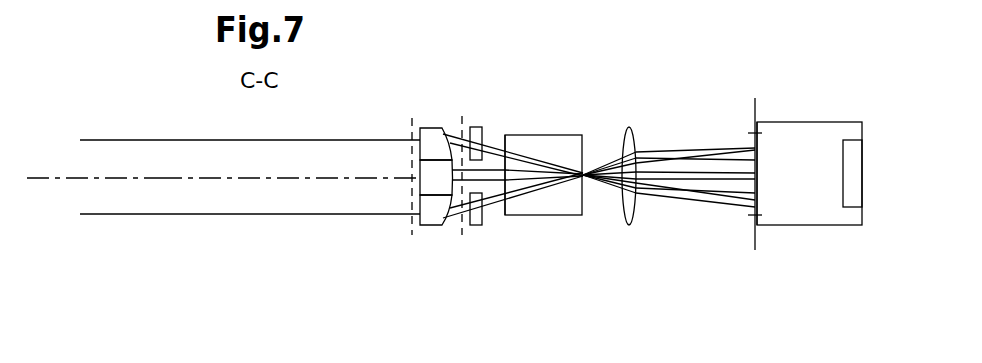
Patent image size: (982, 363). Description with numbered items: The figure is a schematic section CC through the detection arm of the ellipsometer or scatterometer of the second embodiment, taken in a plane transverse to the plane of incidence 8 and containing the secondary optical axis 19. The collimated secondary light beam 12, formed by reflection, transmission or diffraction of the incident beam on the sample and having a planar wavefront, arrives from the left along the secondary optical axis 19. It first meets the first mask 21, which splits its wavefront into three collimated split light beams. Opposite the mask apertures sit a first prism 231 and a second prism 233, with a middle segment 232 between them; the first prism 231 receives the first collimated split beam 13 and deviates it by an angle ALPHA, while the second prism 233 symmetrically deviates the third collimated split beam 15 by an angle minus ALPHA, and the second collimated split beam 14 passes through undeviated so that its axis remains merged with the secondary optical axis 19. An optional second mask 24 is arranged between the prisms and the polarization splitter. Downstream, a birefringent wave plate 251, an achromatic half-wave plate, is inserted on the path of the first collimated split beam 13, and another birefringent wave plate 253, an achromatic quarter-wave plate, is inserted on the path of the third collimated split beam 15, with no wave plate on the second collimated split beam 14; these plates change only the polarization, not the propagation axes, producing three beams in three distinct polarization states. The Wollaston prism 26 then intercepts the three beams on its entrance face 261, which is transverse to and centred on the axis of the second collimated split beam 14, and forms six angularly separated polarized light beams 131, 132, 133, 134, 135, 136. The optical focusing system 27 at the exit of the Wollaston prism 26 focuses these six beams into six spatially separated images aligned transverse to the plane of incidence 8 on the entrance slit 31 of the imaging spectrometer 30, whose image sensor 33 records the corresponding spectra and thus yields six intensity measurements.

The plane of incidence 8 is at (62, 178).
The secondary light beam 12 is at (123, 214).
The secondary optical axis 19 is at (163, 178).
The first collimated split beam 13 is at (391, 180).
The first prism 231 is at (430, 137).
The middle segment of splitting lens 232 is at (428, 180).
The second prism 233 is at (430, 218).
The first mask 21 is at (412, 233).
The second mask 24 is at (462, 128).
The birefringent wave plate 251 is at (478, 127).
The birefringent wave plate 253 is at (478, 225).
The second collimated split beam 14 is at (492, 164).
The third collimated split beam 15 is at (447, 222).
The Wollaston prism 26 is at (567, 216).
The entrance face 261 is at (495, 212).
The optical focusing system 27 is at (621, 226).
The polarized light beam 131 is at (744, 148).
The polarized light beam 132 is at (724, 158).
The polarized light beam 133 is at (710, 155).
The polarized light beam 134 is at (742, 184).
The polarized light beam 135 is at (760, 185).
The polarized light beam 136 is at (738, 205).
The imaging spectrometer 30 is at (807, 133).
The entrance slit 31 is at (757, 238).
The image sensor 33 is at (852, 140).